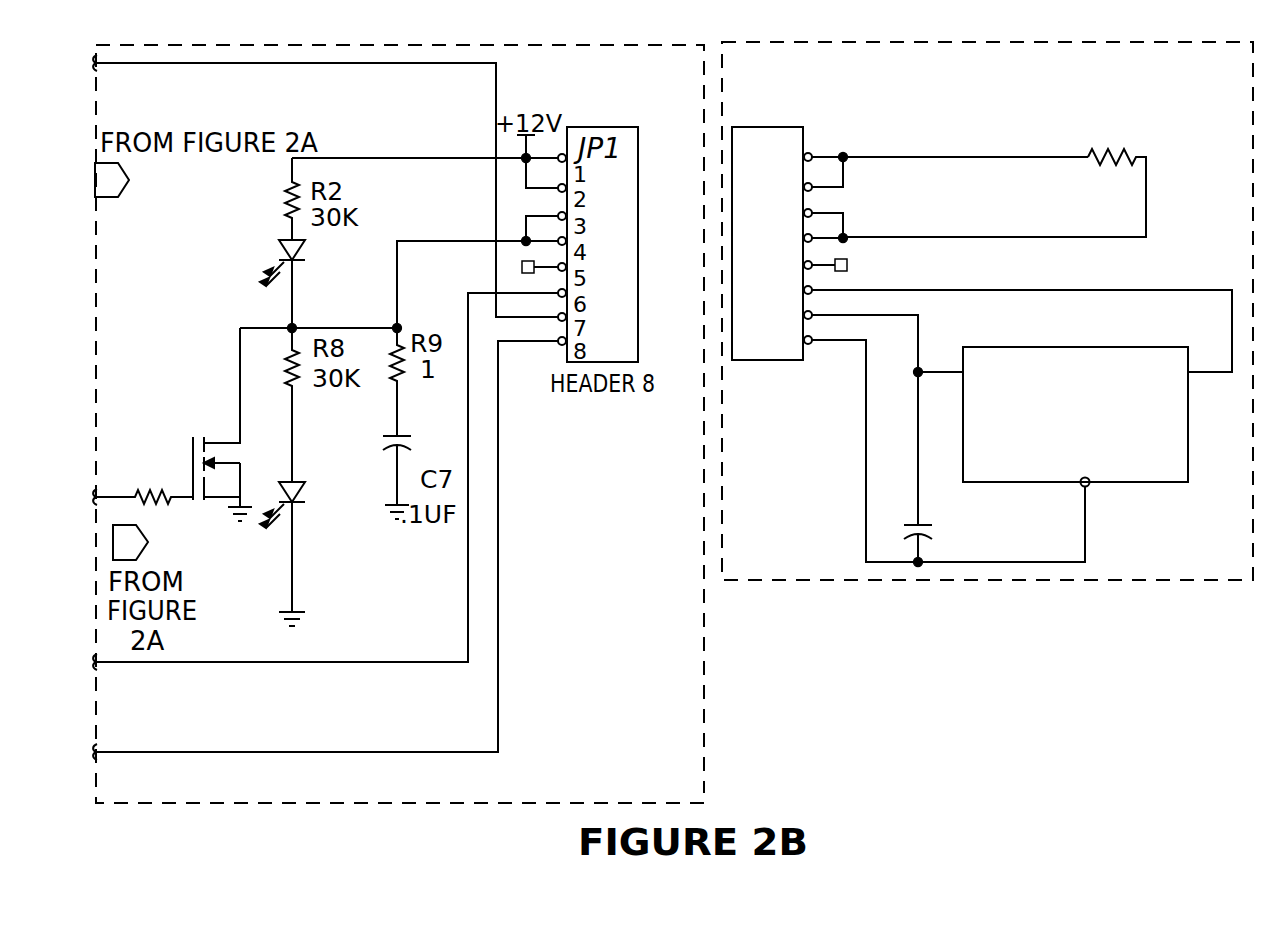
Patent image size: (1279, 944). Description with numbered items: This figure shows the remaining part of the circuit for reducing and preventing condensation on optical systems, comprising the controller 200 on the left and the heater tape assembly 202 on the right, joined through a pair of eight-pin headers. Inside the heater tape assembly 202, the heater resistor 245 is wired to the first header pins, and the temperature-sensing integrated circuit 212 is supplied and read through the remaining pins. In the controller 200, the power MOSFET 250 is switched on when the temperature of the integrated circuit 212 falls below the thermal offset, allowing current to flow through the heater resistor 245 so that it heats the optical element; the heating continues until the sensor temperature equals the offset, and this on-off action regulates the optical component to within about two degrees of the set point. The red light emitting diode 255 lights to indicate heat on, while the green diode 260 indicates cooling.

The controller 200 is at (704, 673).
The heater tape assembly 202 is at (832, 588).
The integrated circuit U2 212 is at (1030, 304).
The heater resistor R1 245 is at (1103, 147).
The power MOSFET Q1 250 is at (203, 310).
The light emitting diode D2 255 is at (260, 182).
The diode D3 260 is at (360, 434).